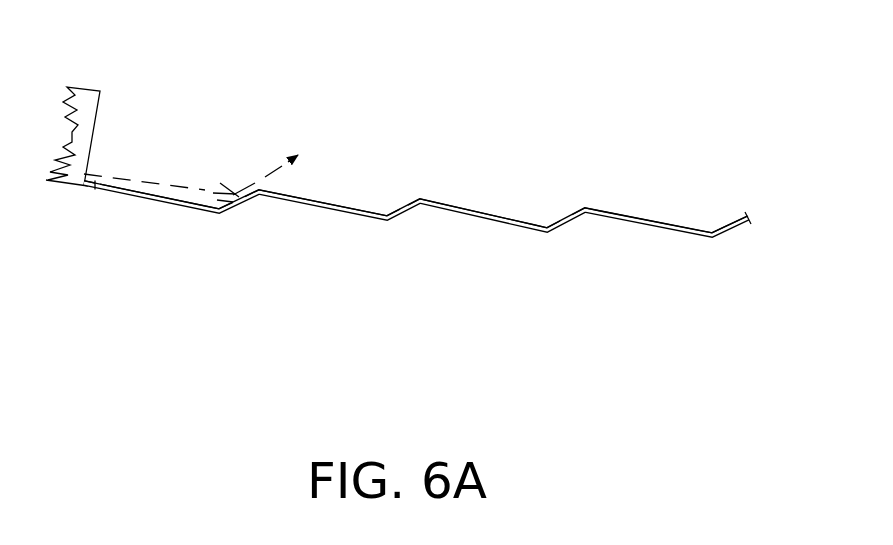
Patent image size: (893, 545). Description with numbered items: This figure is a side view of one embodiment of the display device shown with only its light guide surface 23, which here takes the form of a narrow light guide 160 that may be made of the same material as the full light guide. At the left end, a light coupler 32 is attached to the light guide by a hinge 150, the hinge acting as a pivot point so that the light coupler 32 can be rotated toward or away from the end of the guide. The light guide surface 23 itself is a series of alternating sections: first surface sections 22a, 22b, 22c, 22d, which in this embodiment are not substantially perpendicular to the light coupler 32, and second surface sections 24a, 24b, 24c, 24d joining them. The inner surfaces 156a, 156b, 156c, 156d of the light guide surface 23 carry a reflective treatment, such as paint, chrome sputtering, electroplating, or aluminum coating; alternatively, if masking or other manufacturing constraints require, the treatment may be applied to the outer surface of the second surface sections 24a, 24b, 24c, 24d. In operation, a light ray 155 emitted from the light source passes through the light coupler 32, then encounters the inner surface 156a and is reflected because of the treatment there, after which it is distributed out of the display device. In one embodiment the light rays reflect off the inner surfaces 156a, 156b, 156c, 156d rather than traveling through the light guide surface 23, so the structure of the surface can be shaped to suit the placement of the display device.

The narrow light guide 160 is at (400, 60).
The light coupler 32 is at (84, 80).
The light ray 155 is at (164, 176).
The light guide surface 23 is at (365, 315).
The hinge 150 is at (93, 197).
The first surface section 22a is at (157, 208).
The first surface section 22b is at (318, 213).
The first surface section 22c is at (480, 223).
The first surface section 22d is at (635, 227).
The second surface section 24a is at (245, 208).
The second surface section 24b is at (410, 218).
The second surface section 24c is at (573, 223).
The second surface section 24d is at (740, 235).
The inner surface 156a is at (237, 183).
The inner surface 156b is at (397, 200).
The inner surface 156c is at (562, 212).
The inner surface 156d is at (725, 213).